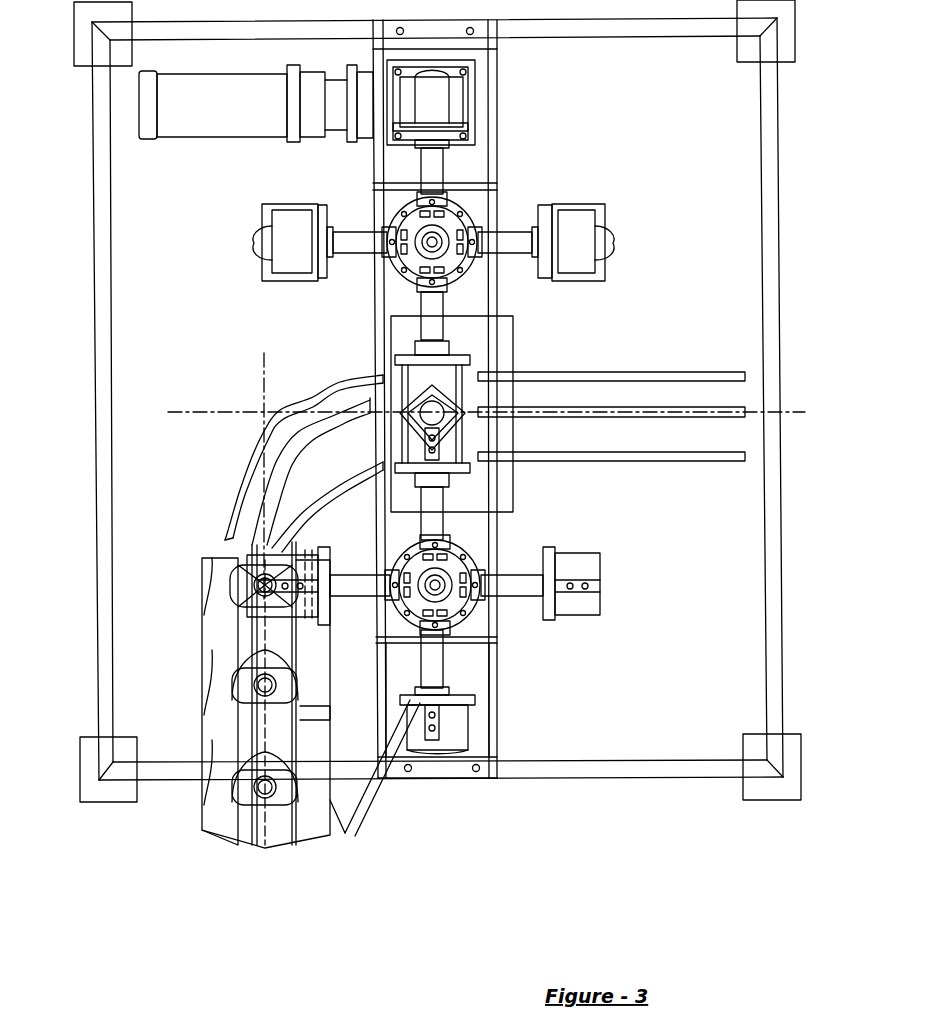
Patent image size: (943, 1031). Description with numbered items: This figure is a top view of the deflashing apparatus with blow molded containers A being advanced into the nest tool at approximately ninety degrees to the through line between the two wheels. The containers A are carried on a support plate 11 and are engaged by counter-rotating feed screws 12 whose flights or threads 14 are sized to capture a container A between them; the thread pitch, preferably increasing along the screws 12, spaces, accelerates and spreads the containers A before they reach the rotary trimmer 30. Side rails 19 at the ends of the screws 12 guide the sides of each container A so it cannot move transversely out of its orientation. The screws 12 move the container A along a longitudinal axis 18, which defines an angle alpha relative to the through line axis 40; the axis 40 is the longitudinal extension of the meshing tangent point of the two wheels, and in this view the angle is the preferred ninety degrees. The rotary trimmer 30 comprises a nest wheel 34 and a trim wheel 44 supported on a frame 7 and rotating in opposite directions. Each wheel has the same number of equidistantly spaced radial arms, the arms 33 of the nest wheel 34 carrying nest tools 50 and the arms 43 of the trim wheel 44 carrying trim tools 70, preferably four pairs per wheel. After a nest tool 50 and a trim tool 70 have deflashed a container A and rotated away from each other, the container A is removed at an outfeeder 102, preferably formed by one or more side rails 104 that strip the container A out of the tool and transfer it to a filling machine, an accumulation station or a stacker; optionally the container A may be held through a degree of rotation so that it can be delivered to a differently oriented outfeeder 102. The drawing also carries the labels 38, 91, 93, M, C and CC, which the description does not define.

The frame 7 is at (776, 598).
The support plate 11 is at (255, 528).
The feed screws 12 is at (223, 830).
The flights or threads 14 is at (207, 788).
The longitudinal axis 18 is at (214, 410).
The side rails 19 is at (250, 478).
The rotary trimmer 30 is at (600, 168).
The arms 33 is at (440, 500).
The nest wheel 34 is at (468, 553).
The base plate 38 is at (400, 752).
The through line axis 40 is at (780, 412).
The arms 43 is at (432, 170).
The trim wheel 44 is at (480, 200).
The nest tool 50 is at (563, 460).
The trim tool 70 is at (465, 97).
The guide bar 91 is at (652, 382).
The guide bar 93 is at (730, 408).
The outfeeder 102 is at (652, 505).
The side rails 104 is at (660, 458).
The motor M is at (218, 140).
The container A is at (272, 557).
The direction C is at (553, 500).
The direction CC is at (555, 330).